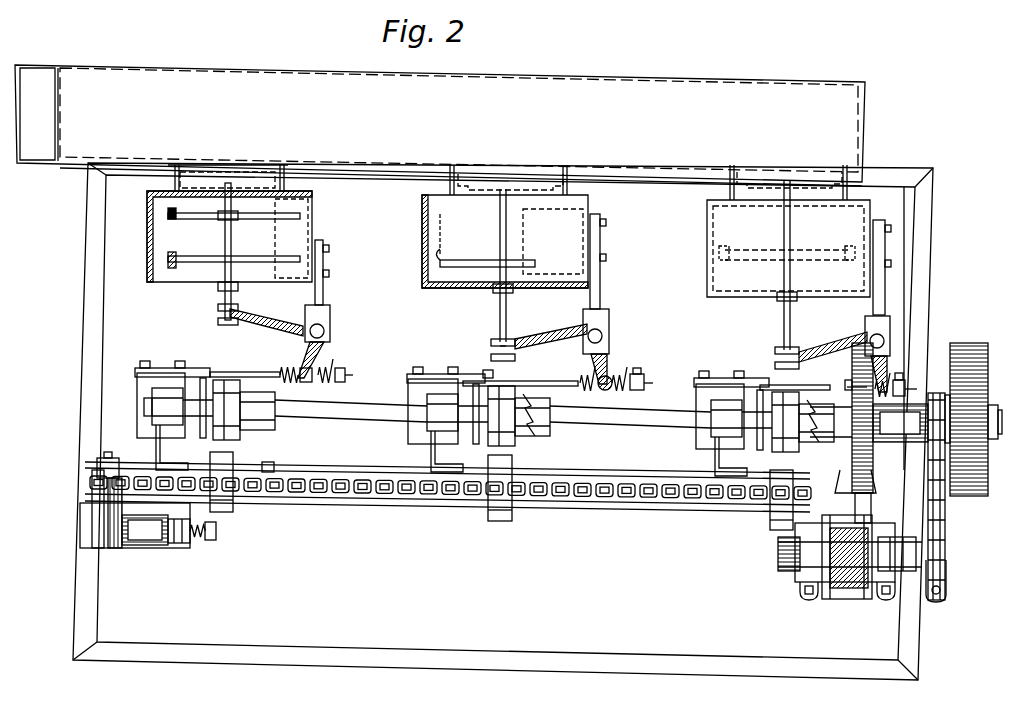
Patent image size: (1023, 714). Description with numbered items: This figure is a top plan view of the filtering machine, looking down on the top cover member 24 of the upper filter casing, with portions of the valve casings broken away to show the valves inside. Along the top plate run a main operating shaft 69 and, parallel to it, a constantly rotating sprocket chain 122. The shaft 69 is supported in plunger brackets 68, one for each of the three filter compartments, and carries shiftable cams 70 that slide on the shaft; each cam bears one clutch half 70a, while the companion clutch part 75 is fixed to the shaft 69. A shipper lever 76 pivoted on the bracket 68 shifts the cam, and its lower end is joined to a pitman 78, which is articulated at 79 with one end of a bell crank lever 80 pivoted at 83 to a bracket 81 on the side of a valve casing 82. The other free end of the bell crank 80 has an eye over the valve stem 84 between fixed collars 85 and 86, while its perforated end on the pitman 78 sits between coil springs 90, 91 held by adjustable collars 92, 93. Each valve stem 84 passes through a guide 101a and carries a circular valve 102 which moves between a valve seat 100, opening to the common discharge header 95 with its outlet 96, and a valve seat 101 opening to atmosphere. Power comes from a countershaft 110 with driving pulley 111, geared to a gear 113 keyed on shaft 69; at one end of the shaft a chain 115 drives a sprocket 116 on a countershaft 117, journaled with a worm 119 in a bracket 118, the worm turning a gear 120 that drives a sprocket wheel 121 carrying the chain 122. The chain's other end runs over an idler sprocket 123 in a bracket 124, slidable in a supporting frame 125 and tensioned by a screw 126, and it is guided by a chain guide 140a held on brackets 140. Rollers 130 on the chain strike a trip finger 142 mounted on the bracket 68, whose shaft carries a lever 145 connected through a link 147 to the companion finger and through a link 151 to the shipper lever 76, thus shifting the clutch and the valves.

The top cover member 24 is at (555, 656).
The plunger bracket 68 is at (144, 404).
The main operating shaft 69 is at (350, 418).
The shiftable cam 70 is at (237, 421).
The clutch half 70a is at (268, 422).
The clutch part 75 is at (310, 418).
The shipper lever 76 is at (214, 388).
The pitman 78 is at (281, 358).
The articulation 79 is at (604, 392).
The bell crank lever 80 is at (277, 343).
The bracket 81 is at (341, 272).
The valve casing 82 is at (248, 236).
The pivotal connection 83 is at (335, 323).
The valve stem 84 is at (246, 251).
The fixed collar 85 is at (208, 314).
The fixed collar 86 is at (239, 333).
The coil spring 90 is at (334, 384).
The coil spring 91 is at (295, 383).
The adjustable collar 92 is at (641, 386).
The adjustable collar 93 is at (345, 362).
The discharge header 95 is at (638, 88).
The outlet 96 is at (40, 158).
The valve seat 100 is at (206, 225).
The valve seat 101 is at (234, 248).
The guide 101a is at (222, 216).
The valve 102 is at (325, 238).
The countershaft 110 is at (996, 420).
The driving pulley 111 is at (962, 348).
The gear 113 is at (852, 374).
The chain 115 is at (940, 512).
The sprocket 116 is at (944, 566).
The countershaft 117 is at (796, 574).
The bracket 118 is at (830, 592).
The worm 119 is at (855, 592).
The gear 120 is at (92, 497).
The sprocket wheel 121 is at (866, 480).
The sprocket chain 122 is at (398, 503).
The idler sprocket 123 is at (100, 468).
The bracket 124 is at (135, 547).
The supporting frame 125 is at (195, 545).
The screw 126 is at (216, 532).
The lug or anti-friction roller 130 is at (274, 468).
The bracket 140 is at (233, 510).
The chain guide 140a is at (548, 512).
The trip finger 142 is at (184, 447).
The lever 145 is at (151, 384).
The link 147 is at (119, 347).
The link 151 is at (155, 339).